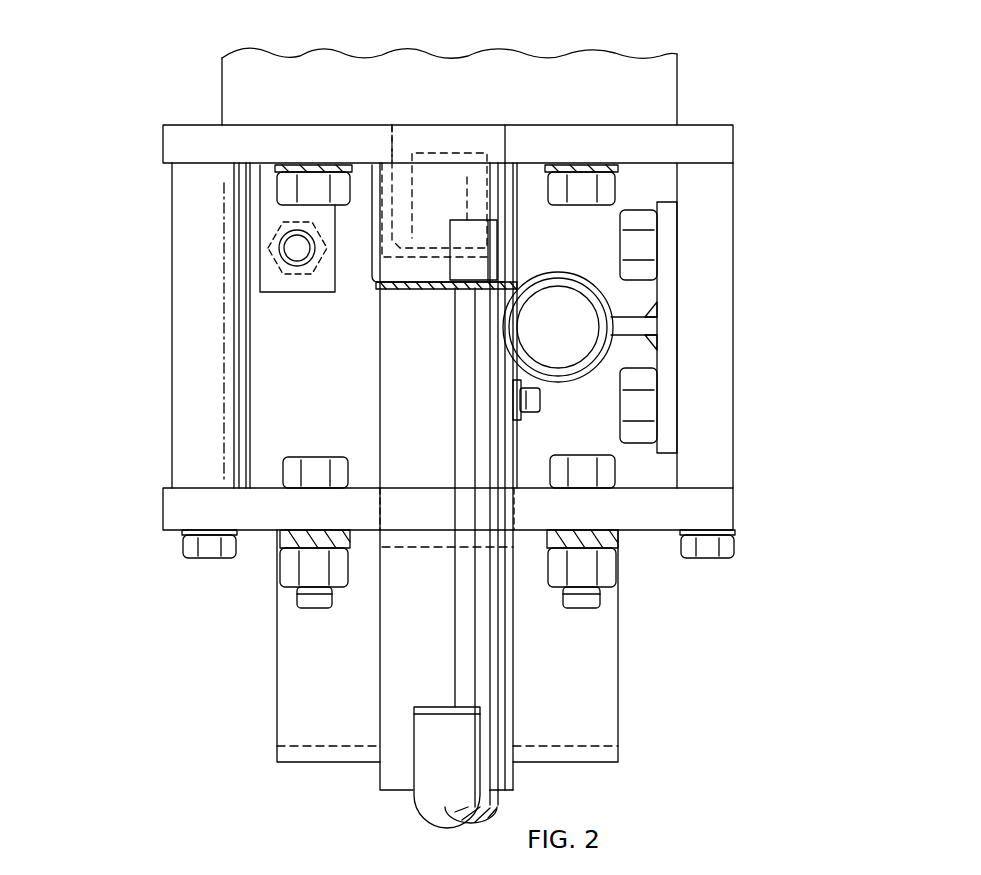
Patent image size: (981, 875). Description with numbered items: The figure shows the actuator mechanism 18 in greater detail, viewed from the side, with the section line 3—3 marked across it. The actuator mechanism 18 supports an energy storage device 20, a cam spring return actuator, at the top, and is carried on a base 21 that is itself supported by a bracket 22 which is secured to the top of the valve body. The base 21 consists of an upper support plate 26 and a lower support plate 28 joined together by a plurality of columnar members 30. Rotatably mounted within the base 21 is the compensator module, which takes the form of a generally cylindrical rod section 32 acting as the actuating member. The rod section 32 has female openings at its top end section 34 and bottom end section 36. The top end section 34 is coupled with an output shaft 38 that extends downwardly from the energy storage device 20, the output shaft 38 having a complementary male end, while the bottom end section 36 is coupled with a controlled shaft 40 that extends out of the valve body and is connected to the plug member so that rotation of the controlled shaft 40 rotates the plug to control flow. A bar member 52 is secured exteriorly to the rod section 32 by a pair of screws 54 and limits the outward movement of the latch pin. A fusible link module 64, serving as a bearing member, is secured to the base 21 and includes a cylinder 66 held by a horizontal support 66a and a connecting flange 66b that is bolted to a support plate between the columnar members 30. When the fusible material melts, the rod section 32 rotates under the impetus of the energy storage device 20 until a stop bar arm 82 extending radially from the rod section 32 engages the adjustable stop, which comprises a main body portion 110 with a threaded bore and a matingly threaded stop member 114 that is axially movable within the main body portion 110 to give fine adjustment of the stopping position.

The actuator mechanism 18 is at (758, 185).
The energy storage device 20 is at (478, 103).
The base 21 is at (737, 247).
The bracket 22 is at (610, 670).
The upper support plate 26 is at (169, 138).
The lower support plate 28 is at (170, 517).
The columnar members 30 is at (192, 438).
The rod section 32 is at (433, 390).
The top end section 34 is at (387, 273).
The bottom end section 36 is at (513, 773).
The output shaft 38 is at (507, 155).
The controlled shaft 40 is at (410, 805).
The bar member 52 is at (522, 412).
The screws 54 is at (540, 401).
The fusible link module 64 is at (583, 270).
The cylinder 66 is at (557, 270).
The horizontal support 66a is at (630, 315).
The connecting flange 66b is at (670, 367).
The stop bar arm 82 is at (463, 226).
The main body portion 110 is at (258, 282).
The stop member 114 is at (287, 247).
The section line 3- 3 is at (161, 326).